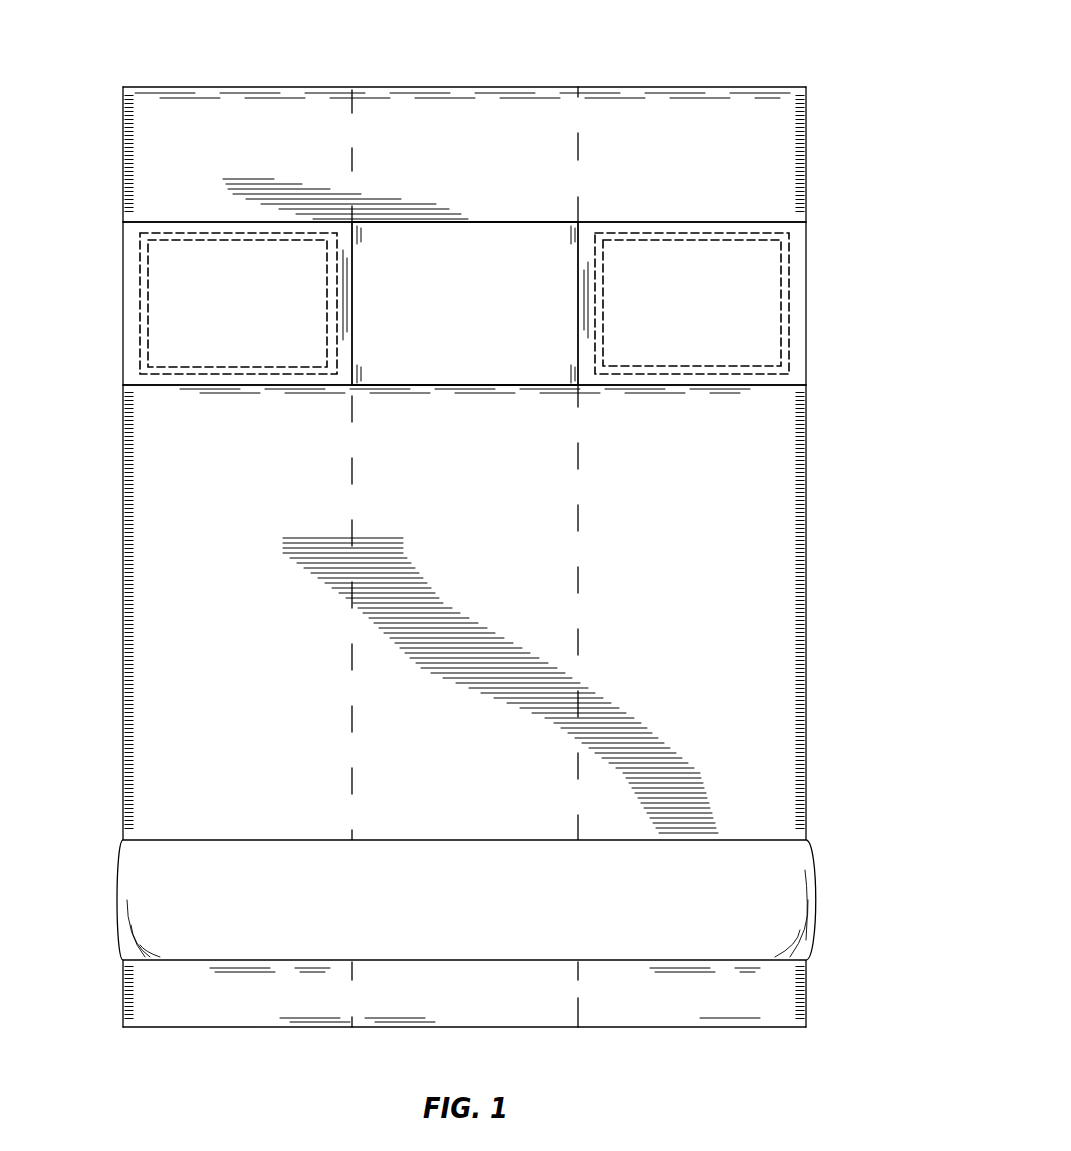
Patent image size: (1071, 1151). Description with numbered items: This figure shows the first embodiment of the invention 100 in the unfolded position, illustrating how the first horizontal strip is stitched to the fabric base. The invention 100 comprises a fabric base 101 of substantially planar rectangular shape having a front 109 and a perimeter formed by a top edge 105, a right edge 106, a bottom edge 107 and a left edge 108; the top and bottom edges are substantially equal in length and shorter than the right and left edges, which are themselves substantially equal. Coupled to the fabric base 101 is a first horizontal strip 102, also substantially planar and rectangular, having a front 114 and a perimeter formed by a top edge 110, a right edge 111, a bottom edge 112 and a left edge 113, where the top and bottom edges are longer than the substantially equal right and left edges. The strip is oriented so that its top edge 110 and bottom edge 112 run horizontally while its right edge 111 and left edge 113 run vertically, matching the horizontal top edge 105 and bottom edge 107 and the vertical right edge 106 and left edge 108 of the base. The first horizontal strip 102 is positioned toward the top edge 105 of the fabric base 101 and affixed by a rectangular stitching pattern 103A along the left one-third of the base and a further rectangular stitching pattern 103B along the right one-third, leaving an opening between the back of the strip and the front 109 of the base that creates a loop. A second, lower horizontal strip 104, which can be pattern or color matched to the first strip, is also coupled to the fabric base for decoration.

The invention 100 is at (734, 68).
The fabric base 101 is at (146, 452).
The first horizontal strip 102 is at (776, 222).
The stitching pattern 103A is at (337, 258).
The stitching pattern 103B is at (789, 268).
The second lower horizontal strip 104 is at (467, 840).
The top edge 105 is at (467, 87).
The right edge 106 is at (806, 557).
The bottom edge 107 is at (467, 1027).
The left edge 108 is at (123, 556).
The front 109 is at (712, 569).
The top edge 110 is at (468, 222).
The right edge 111 is at (806, 303).
The bottom edge 112 is at (469, 385).
The left edge 113 is at (123, 303).
The front 114 is at (487, 316).